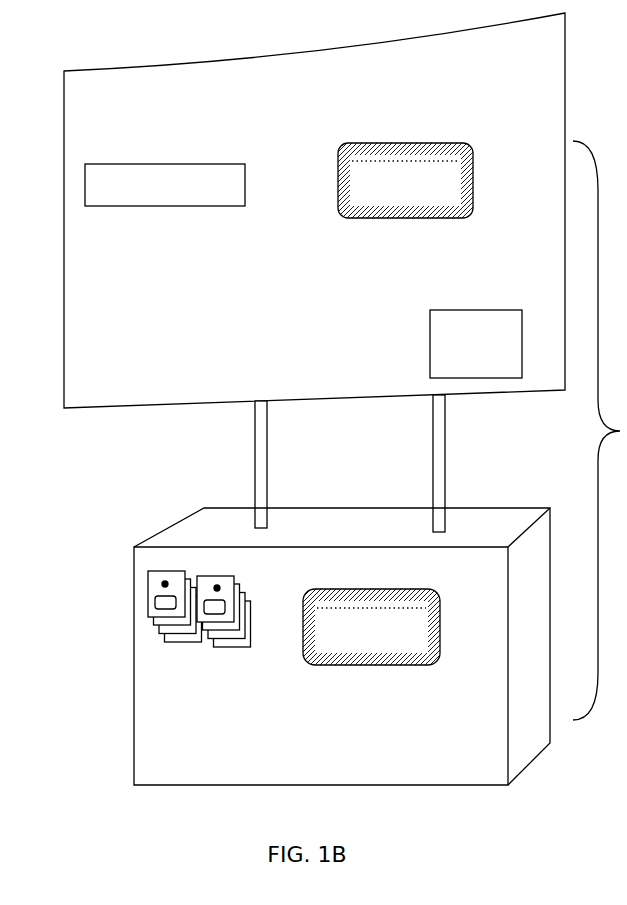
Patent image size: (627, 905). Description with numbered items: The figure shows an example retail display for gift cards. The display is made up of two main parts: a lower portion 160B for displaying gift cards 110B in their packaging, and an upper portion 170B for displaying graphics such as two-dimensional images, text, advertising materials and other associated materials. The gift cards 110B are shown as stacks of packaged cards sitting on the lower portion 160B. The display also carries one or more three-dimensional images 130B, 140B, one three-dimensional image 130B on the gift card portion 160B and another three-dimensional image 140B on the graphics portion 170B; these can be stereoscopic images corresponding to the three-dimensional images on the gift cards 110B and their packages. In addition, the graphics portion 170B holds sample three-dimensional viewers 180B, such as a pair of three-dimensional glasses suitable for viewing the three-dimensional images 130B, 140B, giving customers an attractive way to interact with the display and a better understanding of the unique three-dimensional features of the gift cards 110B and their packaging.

The gift cards 110B is at (160, 597).
The 3D image 130B is at (337, 642).
The 3D image 140B is at (363, 167).
The portion for displaying gift cards 160B is at (200, 531).
The portion for displaying graphics 170B is at (85, 122).
The sample 3D viewers 180B is at (442, 343).